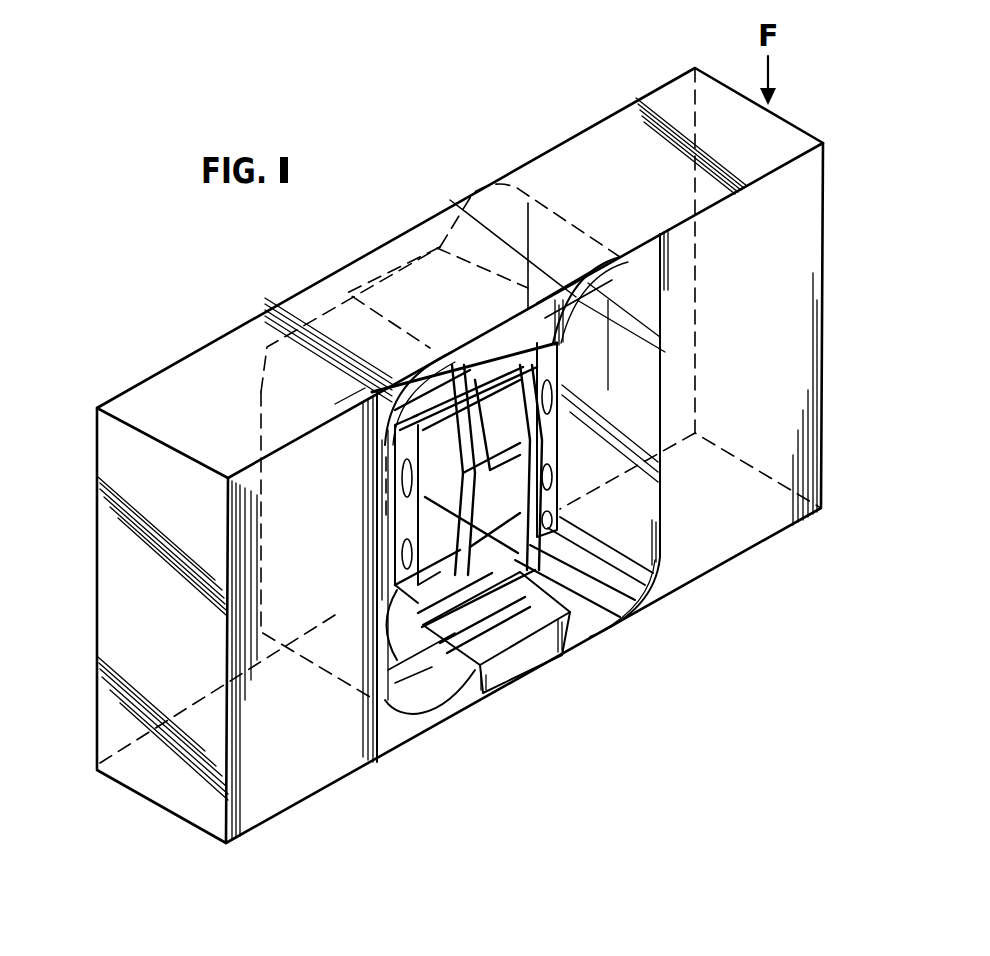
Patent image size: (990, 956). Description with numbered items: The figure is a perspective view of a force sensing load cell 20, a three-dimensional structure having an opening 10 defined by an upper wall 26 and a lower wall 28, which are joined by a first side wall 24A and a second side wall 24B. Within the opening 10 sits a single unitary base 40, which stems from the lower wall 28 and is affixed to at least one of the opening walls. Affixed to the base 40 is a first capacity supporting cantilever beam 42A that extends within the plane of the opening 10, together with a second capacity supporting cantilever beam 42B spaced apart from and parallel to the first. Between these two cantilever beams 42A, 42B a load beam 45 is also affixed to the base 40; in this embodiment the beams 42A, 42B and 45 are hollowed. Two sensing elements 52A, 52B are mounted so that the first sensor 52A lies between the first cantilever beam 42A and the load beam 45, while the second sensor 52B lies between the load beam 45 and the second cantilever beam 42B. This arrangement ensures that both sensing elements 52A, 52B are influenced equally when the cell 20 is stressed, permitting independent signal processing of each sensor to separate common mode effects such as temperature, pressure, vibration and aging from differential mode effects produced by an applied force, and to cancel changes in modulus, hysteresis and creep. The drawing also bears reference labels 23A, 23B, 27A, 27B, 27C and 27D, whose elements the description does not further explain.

The opening 10 is at (652, 532).
The force sensing load cell 20 is at (905, 500).
The first end block 23A is at (322, 722).
The second end block 23B is at (784, 318).
The first side wall 24A is at (372, 622).
The second side wall 24B is at (607, 395).
The upper wall 26 is at (468, 469).
The rounded corner 27A is at (435, 370).
The rounded corner 27B is at (620, 255).
The rounded corner 27C is at (434, 723).
The rounded corner 27D is at (617, 615).
The lower wall 28 is at (517, 665).
The base 40 is at (575, 512).
The first capacity supporting cantilever beam 42A is at (394, 462).
The second capacity supporting cantilever beam 42B is at (558, 484).
The load beam 45 is at (516, 518).
The first sensing element 52A is at (358, 410).
The second sensing element 52B is at (530, 320).